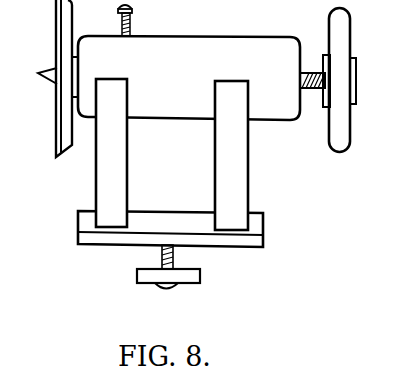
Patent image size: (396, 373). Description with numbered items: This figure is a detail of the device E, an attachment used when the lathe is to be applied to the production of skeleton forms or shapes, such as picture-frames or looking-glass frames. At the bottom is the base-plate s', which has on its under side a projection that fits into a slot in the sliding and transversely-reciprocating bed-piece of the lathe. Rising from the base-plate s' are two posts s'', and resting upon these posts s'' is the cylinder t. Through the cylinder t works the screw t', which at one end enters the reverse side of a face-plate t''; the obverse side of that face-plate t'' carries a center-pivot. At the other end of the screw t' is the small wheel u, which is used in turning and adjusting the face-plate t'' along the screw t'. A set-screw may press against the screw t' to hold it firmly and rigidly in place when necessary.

The cylinder t is at (189, 78).
The screw t' is at (190, 78).
The face-plate t'' is at (38, 78).
The small wheel u is at (237, 76).
The base-plate s' is at (170, 250).
The posts s'' is at (172, 154).
The device for making skeleton forms E is at (159, 170).